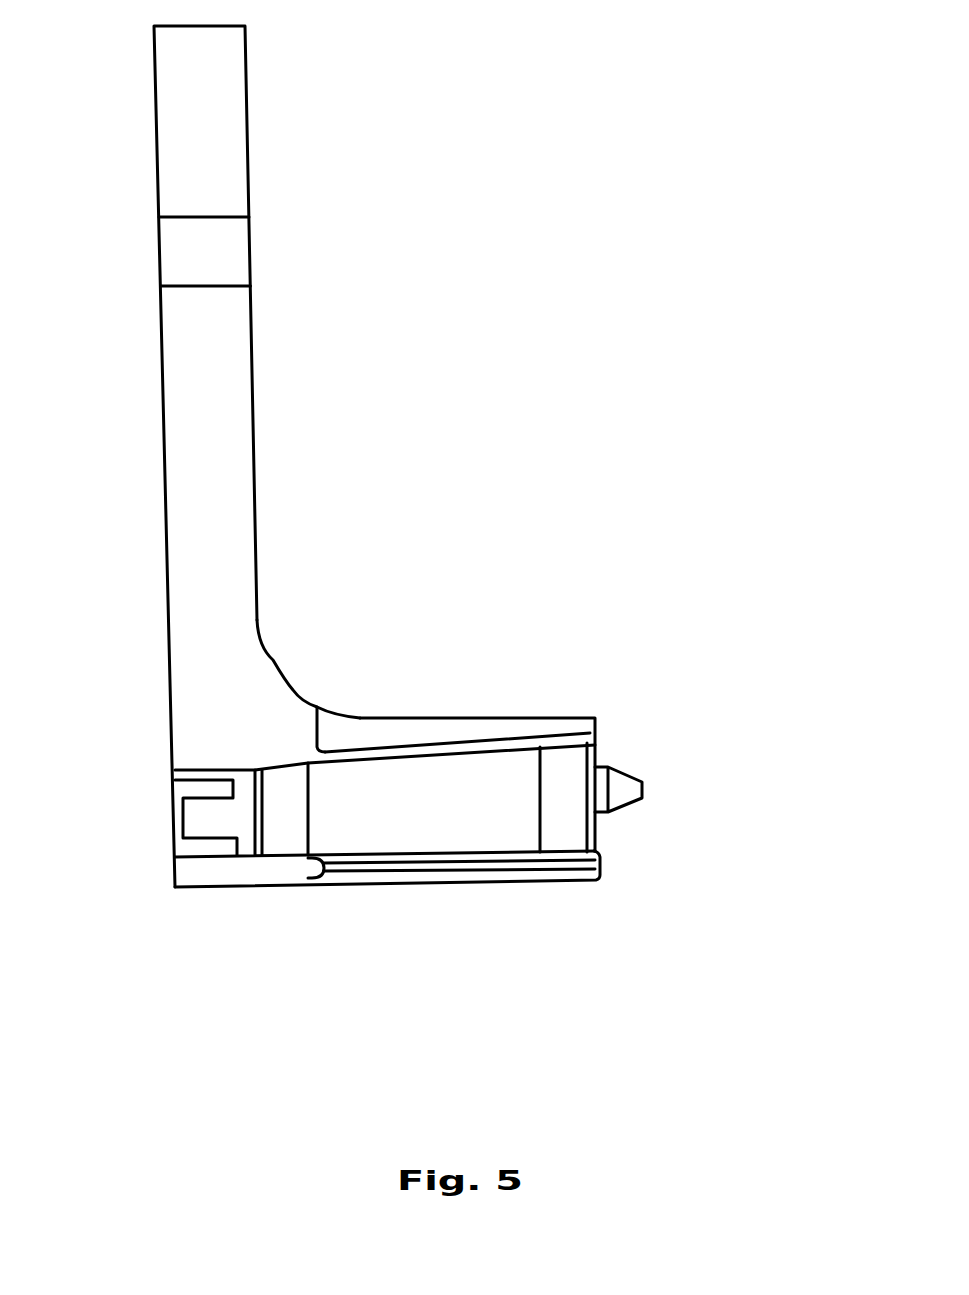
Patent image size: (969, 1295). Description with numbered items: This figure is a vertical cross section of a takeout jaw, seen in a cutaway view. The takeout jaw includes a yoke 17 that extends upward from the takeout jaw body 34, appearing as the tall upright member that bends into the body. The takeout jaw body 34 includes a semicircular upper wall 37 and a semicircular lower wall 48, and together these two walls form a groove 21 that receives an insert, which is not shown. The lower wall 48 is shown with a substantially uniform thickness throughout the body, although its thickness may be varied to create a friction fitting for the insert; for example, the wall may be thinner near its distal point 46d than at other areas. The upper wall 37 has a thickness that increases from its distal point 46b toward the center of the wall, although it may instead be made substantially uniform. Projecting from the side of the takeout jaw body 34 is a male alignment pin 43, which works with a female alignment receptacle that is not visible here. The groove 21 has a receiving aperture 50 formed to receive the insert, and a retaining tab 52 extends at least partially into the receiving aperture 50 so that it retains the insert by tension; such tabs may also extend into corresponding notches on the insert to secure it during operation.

The yoke 17 is at (256, 127).
The takeout jaw body 34 is at (270, 642).
The semicircular upper wall 37 is at (482, 706).
The groove 21 is at (425, 797).
The distal point 46b is at (585, 730).
The distal point 46d is at (556, 824).
The male alignment pin 43 is at (633, 789).
The semicircular lower wall 48 is at (348, 880).
The receiving aperture 50 is at (274, 810).
The retaining tab 52 is at (200, 815).